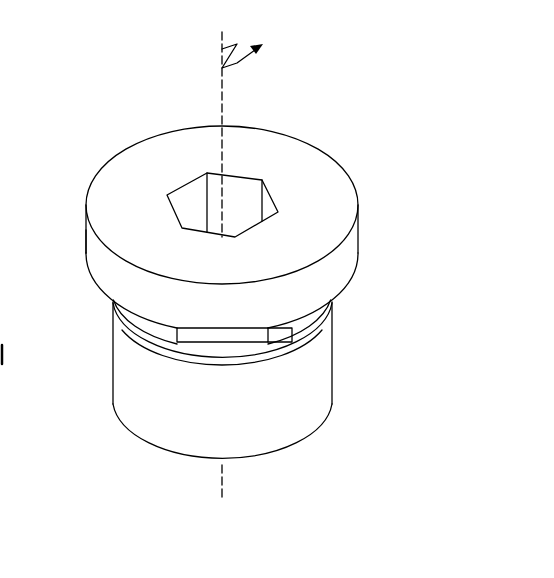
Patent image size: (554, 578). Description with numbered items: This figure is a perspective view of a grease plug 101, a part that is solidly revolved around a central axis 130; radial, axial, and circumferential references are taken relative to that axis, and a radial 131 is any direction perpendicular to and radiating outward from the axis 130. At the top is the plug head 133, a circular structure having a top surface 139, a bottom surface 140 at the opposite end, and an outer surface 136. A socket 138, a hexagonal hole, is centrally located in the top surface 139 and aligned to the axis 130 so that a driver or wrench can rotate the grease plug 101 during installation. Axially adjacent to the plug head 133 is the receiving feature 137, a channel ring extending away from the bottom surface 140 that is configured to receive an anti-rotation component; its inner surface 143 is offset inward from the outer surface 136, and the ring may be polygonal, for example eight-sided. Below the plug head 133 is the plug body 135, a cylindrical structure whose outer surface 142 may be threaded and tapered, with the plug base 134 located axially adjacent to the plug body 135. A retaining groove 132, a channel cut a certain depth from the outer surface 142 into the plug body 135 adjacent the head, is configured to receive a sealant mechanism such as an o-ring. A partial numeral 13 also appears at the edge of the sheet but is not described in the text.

The grease plug 101 is at (347, 125).
The central axis 130 is at (222, 64).
The radial 131 is at (242, 60).
The retaining groove 132 is at (155, 342).
The plug head 133 is at (352, 247).
The plug base 134 is at (282, 453).
The plug body 135 is at (303, 402).
The outer surface 136 is at (98, 250).
The receiving feature 137 is at (287, 330).
The socket 138 is at (194, 177).
The top surface 139 is at (115, 170).
The bottom surface 140 is at (333, 293).
The outer surface 142 is at (130, 417).
The inner surface 143 is at (230, 337).
The partial numeral 13 is at (12, 411).